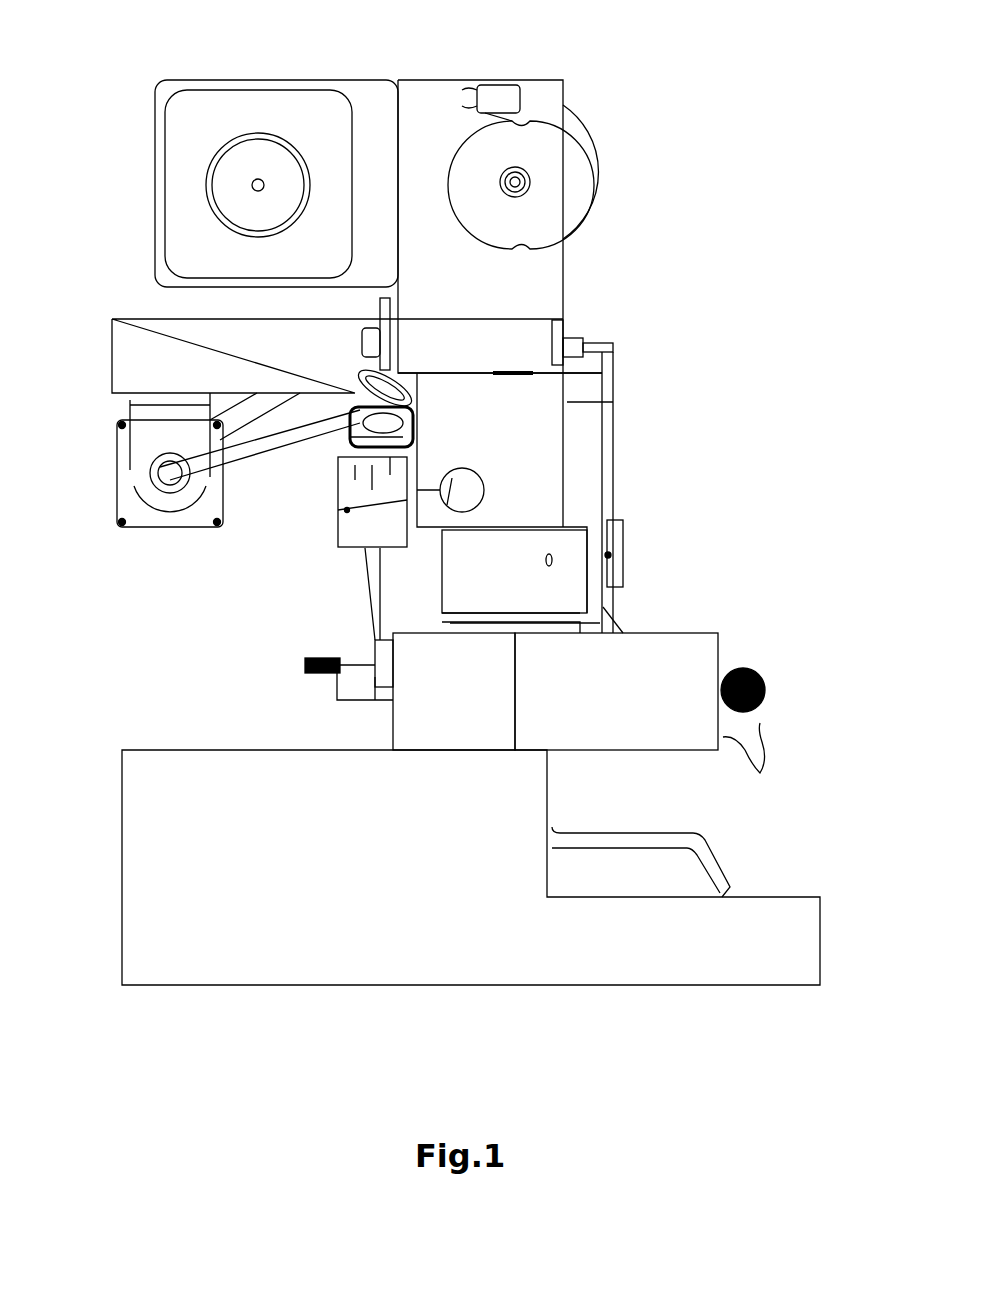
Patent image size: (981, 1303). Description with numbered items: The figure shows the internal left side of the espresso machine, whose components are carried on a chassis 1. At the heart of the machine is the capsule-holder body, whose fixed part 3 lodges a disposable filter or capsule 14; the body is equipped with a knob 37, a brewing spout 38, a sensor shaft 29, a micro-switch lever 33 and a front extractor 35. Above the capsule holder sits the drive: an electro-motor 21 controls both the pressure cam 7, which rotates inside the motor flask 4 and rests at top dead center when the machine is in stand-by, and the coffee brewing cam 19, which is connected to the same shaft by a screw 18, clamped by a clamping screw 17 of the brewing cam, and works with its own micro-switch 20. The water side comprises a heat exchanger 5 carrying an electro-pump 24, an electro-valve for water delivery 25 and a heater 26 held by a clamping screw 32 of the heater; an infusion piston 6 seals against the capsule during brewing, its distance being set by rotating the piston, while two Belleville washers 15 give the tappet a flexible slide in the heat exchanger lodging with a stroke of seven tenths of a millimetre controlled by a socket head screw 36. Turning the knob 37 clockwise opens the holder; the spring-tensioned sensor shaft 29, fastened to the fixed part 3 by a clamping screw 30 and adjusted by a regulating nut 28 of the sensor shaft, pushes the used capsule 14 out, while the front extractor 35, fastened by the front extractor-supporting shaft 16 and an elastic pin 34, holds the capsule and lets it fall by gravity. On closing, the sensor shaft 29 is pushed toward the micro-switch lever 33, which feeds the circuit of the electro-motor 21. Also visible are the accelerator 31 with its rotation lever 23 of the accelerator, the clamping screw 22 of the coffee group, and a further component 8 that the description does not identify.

The chassis 1 is at (483, 888).
The fixed part of the capsule-holder body 3 is at (457, 710).
The motor flask 4 is at (544, 107).
The heat exchanger 5 is at (547, 412).
The infusion piston 6 is at (622, 520).
The pressure cam 7 is at (580, 135).
The drive housing 8 is at (618, 705).
The disposable filter or capsule 14 is at (450, 623).
The Belleville washers 15 is at (560, 375).
The front extractor-supporting shaft 16 is at (603, 348).
The clamping screw of the brewing cam 17 is at (567, 348).
The screw 18 is at (528, 182).
The coffee brewing cam 19 is at (537, 178).
The micro-switch 20 is at (485, 93).
The electro-motor 21 is at (240, 120).
The clamping screw of the coffee group 22 is at (370, 348).
The rotation lever of the accelerator 23 is at (365, 392).
The electro-pump 24 is at (155, 480).
The electro-valve for water delivery 25 is at (337, 473).
The heater 26 is at (450, 508).
The regulating nut of the sensor shaft 28 is at (375, 662).
The sensor shaft 29 is at (373, 660).
The clamping screw 30 is at (377, 653).
The accelerator 31 is at (305, 665).
The clamping screw of the heater 32 is at (347, 510).
The micro-switch lever 33 is at (350, 447).
The elastic pin 34 is at (608, 555).
The front extractor 35 is at (607, 605).
The socket head screw 36 is at (567, 402).
The knob 37 is at (763, 703).
The brewing spout 38 is at (770, 757).